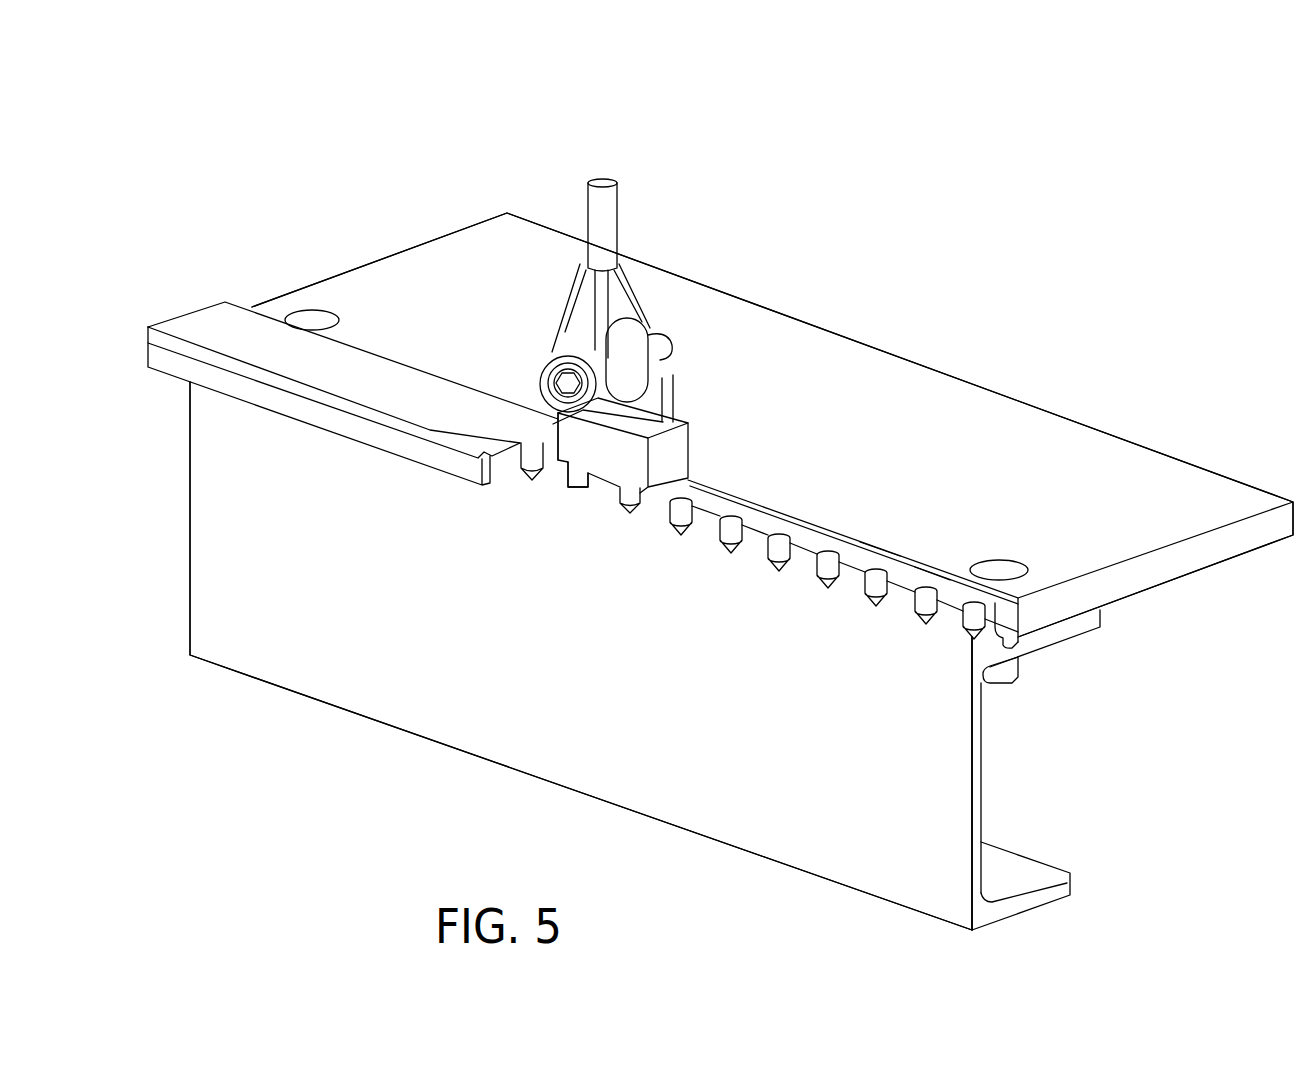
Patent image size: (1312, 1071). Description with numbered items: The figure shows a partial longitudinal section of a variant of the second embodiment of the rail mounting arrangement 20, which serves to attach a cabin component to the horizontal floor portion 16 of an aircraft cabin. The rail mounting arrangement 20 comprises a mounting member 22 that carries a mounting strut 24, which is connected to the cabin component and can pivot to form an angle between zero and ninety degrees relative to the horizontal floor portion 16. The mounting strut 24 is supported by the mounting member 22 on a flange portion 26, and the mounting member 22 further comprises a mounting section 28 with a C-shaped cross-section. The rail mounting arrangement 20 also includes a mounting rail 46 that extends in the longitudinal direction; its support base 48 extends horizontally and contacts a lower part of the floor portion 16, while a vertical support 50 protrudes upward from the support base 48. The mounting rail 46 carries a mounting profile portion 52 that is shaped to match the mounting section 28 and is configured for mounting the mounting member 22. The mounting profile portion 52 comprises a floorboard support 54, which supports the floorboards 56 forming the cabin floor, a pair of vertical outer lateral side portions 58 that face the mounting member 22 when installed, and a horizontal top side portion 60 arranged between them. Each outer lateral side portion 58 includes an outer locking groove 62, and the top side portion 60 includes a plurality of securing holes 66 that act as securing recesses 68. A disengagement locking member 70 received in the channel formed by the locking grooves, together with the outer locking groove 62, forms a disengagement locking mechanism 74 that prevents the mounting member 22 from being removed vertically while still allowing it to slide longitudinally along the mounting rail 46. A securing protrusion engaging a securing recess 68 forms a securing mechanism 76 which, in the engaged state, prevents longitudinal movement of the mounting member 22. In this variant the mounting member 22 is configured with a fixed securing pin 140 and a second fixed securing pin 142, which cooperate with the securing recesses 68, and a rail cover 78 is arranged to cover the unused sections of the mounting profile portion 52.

The horizontal floor portion 16 is at (331, 74).
The rail mounting arrangement 20 is at (416, 112).
The mounting member 22 is at (735, 395).
The mounting strut 24 is at (600, 218).
The flange portion 26 is at (652, 335).
The mounting section 28 is at (745, 442).
The mounting rail 46 is at (758, 889).
The support base 48 is at (1025, 902).
The vertical support 50 is at (978, 777).
The mounting profile portion 52 is at (876, 553).
The floorboard support 54 is at (1085, 627).
The floorboards 56 is at (985, 432).
The outer lateral side portion 58 is at (1000, 625).
The top side portion 60 is at (929, 570).
The outer locking groove 62 is at (1006, 625).
The securing holes 66 is at (540, 503).
The securing recesses 68 is at (827, 568).
The disengagement locking member 70 is at (537, 437).
The disengagement locking mechanism 74 is at (432, 206).
The securing mechanism 76 is at (553, 630).
The rail cover 78 is at (250, 347).
The fixed securing pin 140 is at (573, 490).
The second fixed securing pin 142 is at (628, 512).